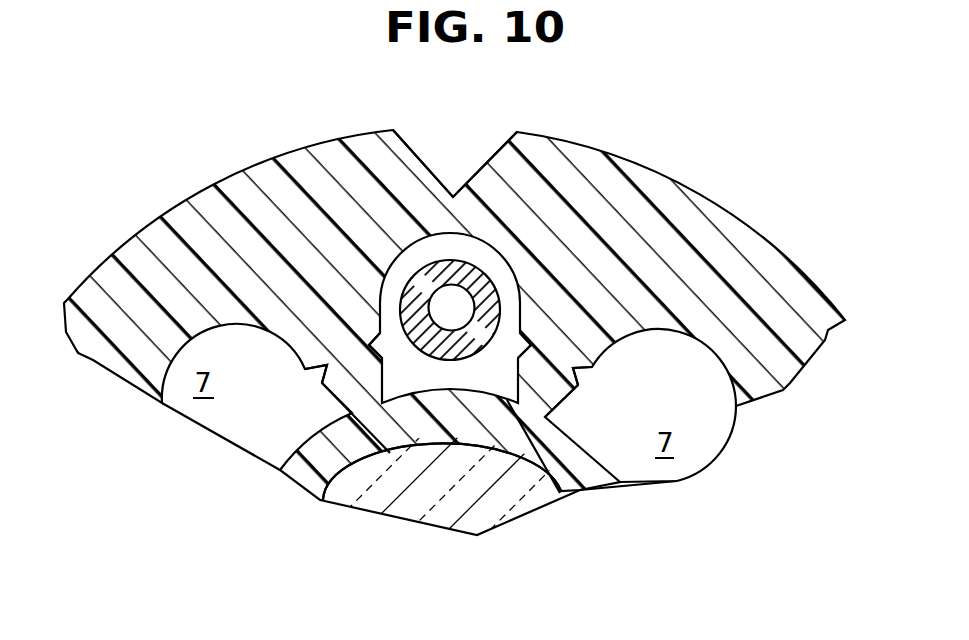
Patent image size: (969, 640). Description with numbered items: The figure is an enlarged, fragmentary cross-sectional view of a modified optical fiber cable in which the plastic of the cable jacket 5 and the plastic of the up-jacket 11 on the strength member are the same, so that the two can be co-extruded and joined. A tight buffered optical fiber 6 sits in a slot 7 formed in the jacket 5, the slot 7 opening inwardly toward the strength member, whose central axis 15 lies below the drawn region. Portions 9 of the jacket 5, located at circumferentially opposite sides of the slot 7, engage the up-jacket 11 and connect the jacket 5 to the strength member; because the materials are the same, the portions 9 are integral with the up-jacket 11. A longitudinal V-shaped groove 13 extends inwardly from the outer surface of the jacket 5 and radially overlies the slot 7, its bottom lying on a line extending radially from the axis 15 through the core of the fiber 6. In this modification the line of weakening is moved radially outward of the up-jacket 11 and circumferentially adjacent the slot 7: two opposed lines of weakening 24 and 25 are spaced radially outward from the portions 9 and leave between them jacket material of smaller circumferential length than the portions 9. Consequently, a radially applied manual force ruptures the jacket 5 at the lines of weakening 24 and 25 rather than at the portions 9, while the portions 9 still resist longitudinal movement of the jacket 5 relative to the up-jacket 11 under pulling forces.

The jacket 5 is at (665, 188).
The tight buffered optical fiber 6 is at (473, 270).
The slot 7 is at (410, 258).
The portions 9 is at (367, 405).
The up-jacket 11 is at (585, 492).
The V-shaped groove 13 is at (452, 172).
The axis 15 is at (450, 523).
The line of weakening 24 is at (318, 374).
The line of weakening 25 is at (372, 347).